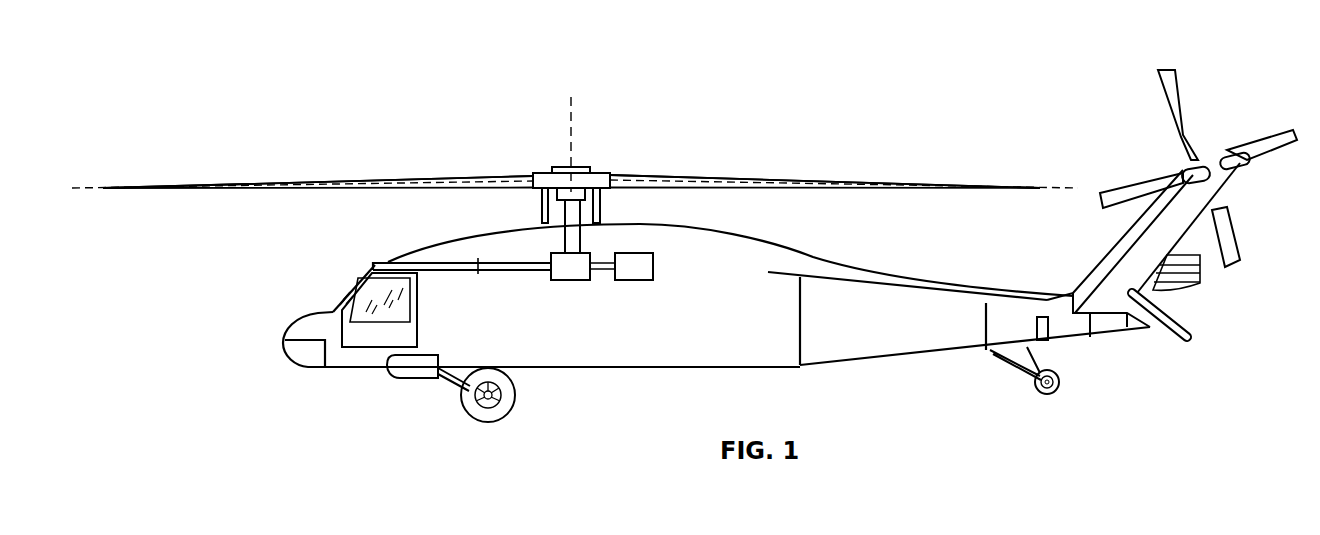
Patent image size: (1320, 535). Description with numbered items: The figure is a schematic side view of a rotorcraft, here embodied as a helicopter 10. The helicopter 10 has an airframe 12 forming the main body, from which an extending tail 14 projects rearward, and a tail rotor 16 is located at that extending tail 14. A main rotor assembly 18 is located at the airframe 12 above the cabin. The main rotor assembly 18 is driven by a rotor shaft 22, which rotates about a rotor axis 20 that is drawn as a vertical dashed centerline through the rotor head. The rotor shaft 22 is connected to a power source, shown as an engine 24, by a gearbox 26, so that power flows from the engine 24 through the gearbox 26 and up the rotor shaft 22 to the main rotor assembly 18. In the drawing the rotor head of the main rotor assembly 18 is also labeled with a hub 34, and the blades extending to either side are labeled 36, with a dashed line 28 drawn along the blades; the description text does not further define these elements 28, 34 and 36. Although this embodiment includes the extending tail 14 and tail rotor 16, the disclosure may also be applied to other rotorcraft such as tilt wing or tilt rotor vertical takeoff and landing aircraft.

The helicopter 10 is at (342, 48).
The airframe 12 is at (633, 355).
The extending tail 14 is at (853, 348).
The tail rotor 16 is at (1227, 240).
The main rotor assembly 18 is at (440, 177).
The rotor axis 20 is at (573, 118).
The rotor shaft 22 is at (563, 243).
The engine 24 is at (635, 282).
The gearbox 26 is at (570, 283).
The rotor blade plane / centerline 28 is at (93, 185).
The rotor hub 34 is at (540, 173).
The rotor blades 36 is at (378, 178).